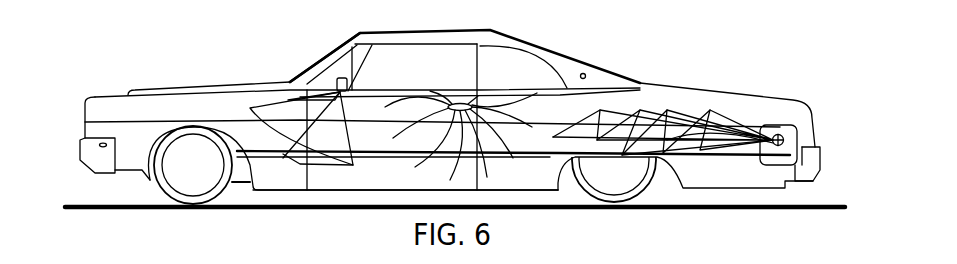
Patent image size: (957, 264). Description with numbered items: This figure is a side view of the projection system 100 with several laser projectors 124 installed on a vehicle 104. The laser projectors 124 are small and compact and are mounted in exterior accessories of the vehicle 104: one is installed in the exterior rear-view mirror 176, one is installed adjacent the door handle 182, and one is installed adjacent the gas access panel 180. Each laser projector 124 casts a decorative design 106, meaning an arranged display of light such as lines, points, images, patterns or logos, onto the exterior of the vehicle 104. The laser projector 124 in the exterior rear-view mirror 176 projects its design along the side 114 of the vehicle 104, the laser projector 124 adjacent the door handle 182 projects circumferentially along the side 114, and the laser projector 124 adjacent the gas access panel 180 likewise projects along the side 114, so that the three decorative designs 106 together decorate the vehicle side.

The projection system 100 is at (477, 131).
The vehicle 104 is at (807, 97).
The decorative design 106 is at (331, 165).
The side 114 is at (286, 181).
The laser projector 124 is at (340, 93).
The exterior rear-view mirror 176 is at (336, 76).
The gas access panel 180 is at (797, 126).
The door handle 182 is at (479, 97).